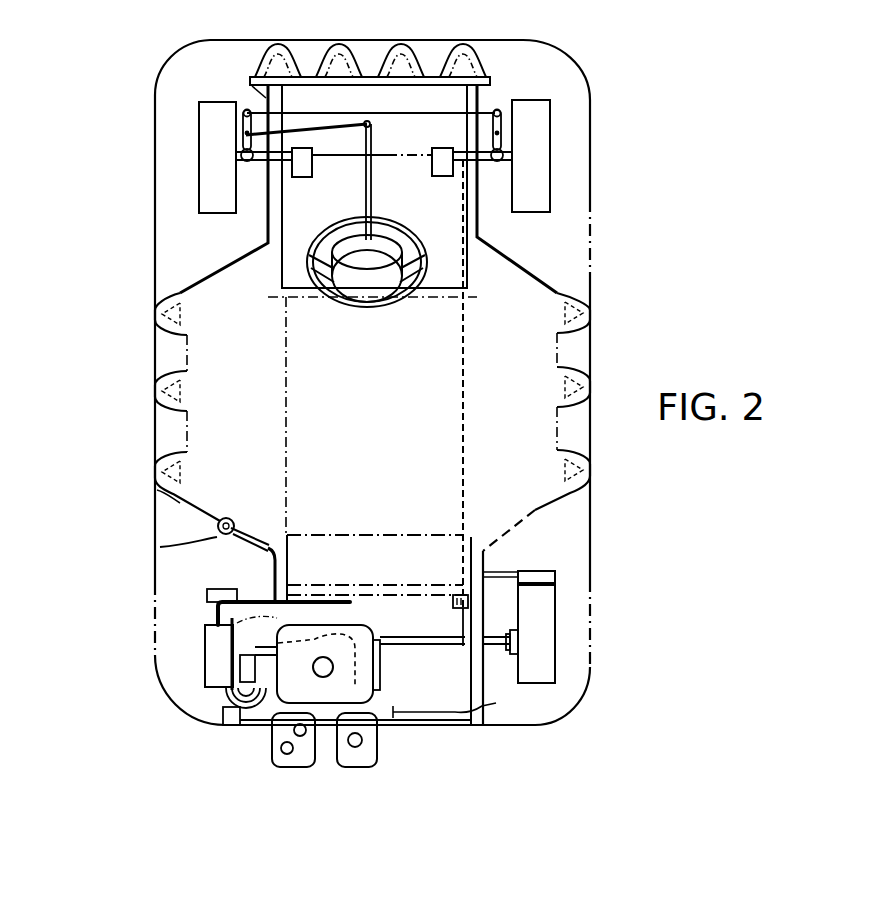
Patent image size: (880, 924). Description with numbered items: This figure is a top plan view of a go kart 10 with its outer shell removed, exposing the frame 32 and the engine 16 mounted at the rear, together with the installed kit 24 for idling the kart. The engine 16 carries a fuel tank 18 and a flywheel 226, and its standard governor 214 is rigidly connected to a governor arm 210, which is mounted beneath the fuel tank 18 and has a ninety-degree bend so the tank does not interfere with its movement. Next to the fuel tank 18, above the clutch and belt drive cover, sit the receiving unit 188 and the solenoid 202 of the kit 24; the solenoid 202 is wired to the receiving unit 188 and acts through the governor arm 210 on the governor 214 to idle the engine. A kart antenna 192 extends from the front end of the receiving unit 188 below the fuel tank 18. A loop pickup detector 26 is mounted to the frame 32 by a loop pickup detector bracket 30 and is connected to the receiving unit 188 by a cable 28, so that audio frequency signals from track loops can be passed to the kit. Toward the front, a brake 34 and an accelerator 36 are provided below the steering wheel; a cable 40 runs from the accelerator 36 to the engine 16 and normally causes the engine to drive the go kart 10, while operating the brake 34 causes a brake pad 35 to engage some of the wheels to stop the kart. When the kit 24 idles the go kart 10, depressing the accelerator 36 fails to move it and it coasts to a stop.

The go kart 10 is at (124, 114).
The engine 16 is at (348, 778).
The fuel tank 18 is at (371, 698).
The kit 24 is at (168, 731).
The loop pickup detector 26 is at (229, 518).
The cable 28 is at (270, 540).
The loop pickup detector bracket 30 is at (160, 547).
The frame 32 is at (157, 490).
The brake 34 is at (302, 160).
The brake pad 35 is at (567, 545).
The accelerator 36 is at (440, 150).
The cable 40 is at (460, 701).
The receiving unit 188 is at (206, 652).
The kart antenna 192 is at (263, 598).
The solenoid 202 is at (266, 702).
The governor arm 210 is at (243, 667).
The governor 214 is at (372, 630).
The flywheel 226 is at (376, 660).